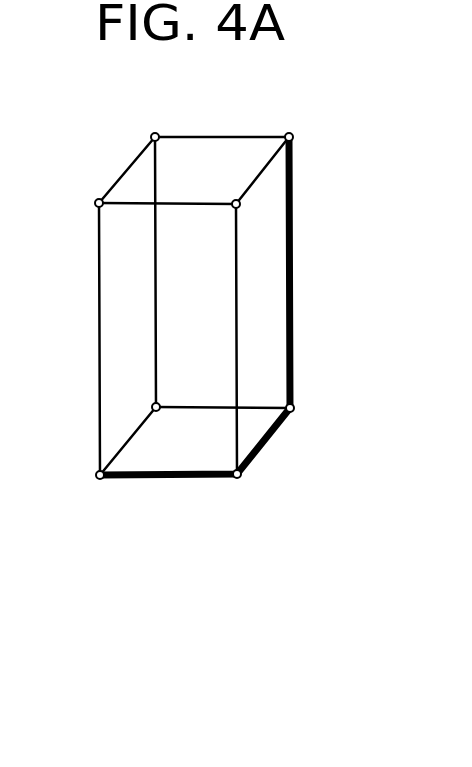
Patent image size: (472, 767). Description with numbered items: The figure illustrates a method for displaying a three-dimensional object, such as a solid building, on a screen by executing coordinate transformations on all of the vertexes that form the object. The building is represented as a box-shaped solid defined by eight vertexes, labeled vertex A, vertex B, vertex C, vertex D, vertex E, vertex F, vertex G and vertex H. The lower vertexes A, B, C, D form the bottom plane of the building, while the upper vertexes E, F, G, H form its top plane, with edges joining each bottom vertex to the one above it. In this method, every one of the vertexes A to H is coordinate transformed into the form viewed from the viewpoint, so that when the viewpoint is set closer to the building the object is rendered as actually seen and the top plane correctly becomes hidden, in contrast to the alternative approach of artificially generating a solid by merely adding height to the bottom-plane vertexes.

The vertex A is at (97, 475).
The vertex B is at (240, 478).
The vertex C is at (153, 407).
The vertex D is at (294, 409).
The vertex E is at (96, 204).
The vertex F is at (240, 205).
The vertex G is at (158, 133).
The vertex H is at (293, 135).